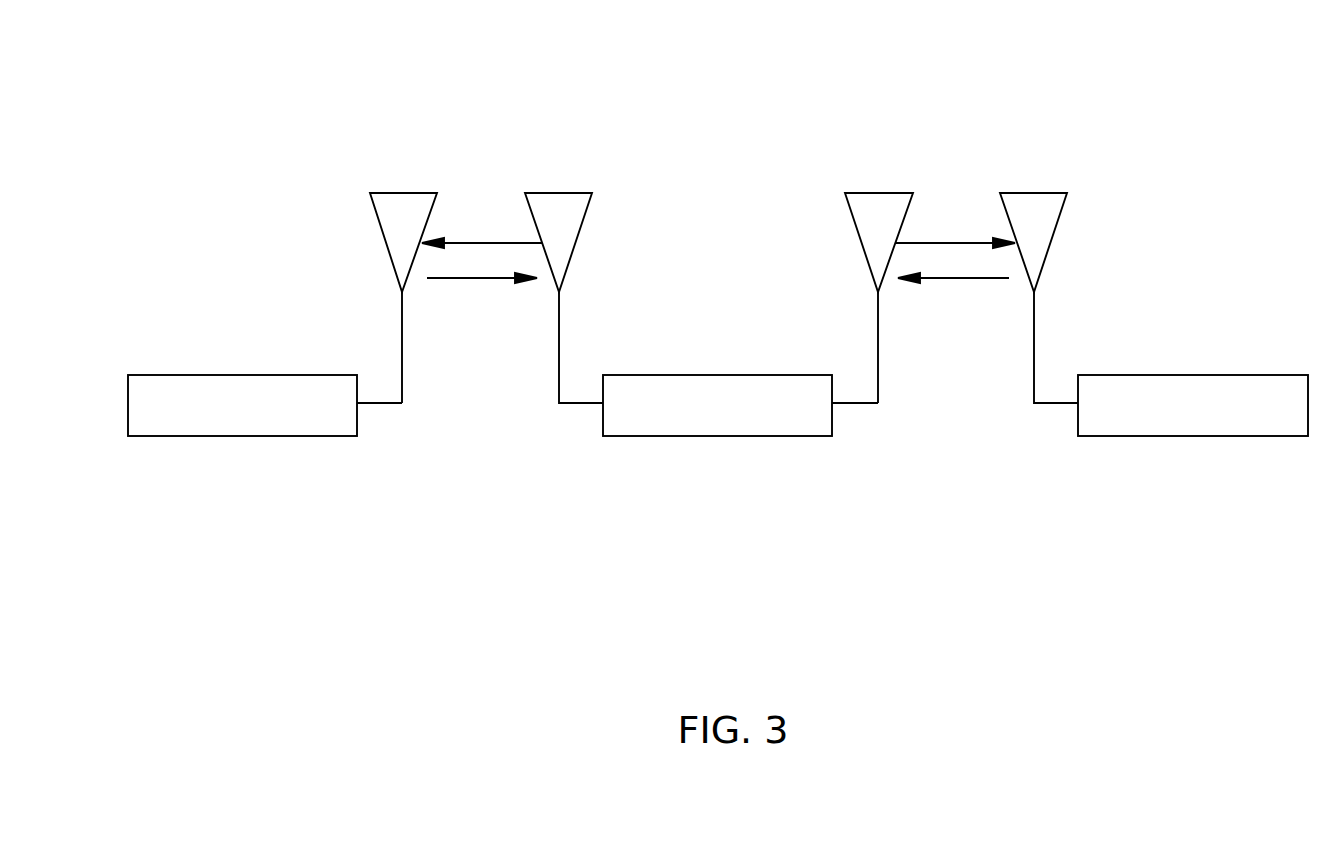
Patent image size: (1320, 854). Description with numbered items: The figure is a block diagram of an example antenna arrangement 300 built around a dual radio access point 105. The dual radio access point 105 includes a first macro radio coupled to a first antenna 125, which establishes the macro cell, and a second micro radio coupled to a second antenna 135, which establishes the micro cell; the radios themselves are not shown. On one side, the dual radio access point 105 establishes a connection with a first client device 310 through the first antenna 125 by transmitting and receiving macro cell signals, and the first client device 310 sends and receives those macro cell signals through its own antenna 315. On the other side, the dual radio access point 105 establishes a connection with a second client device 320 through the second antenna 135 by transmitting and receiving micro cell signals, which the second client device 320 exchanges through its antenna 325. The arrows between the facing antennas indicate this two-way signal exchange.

The wireless network system 300 is at (243, 101).
The first client device 310 is at (244, 436).
The antenna 315 is at (373, 218).
The first antenna 125 is at (585, 218).
The dual radio access point 105 is at (718, 436).
The second antenna 135 is at (850, 218).
The antenna 325 is at (1060, 218).
The second client device 320 is at (1193, 436).